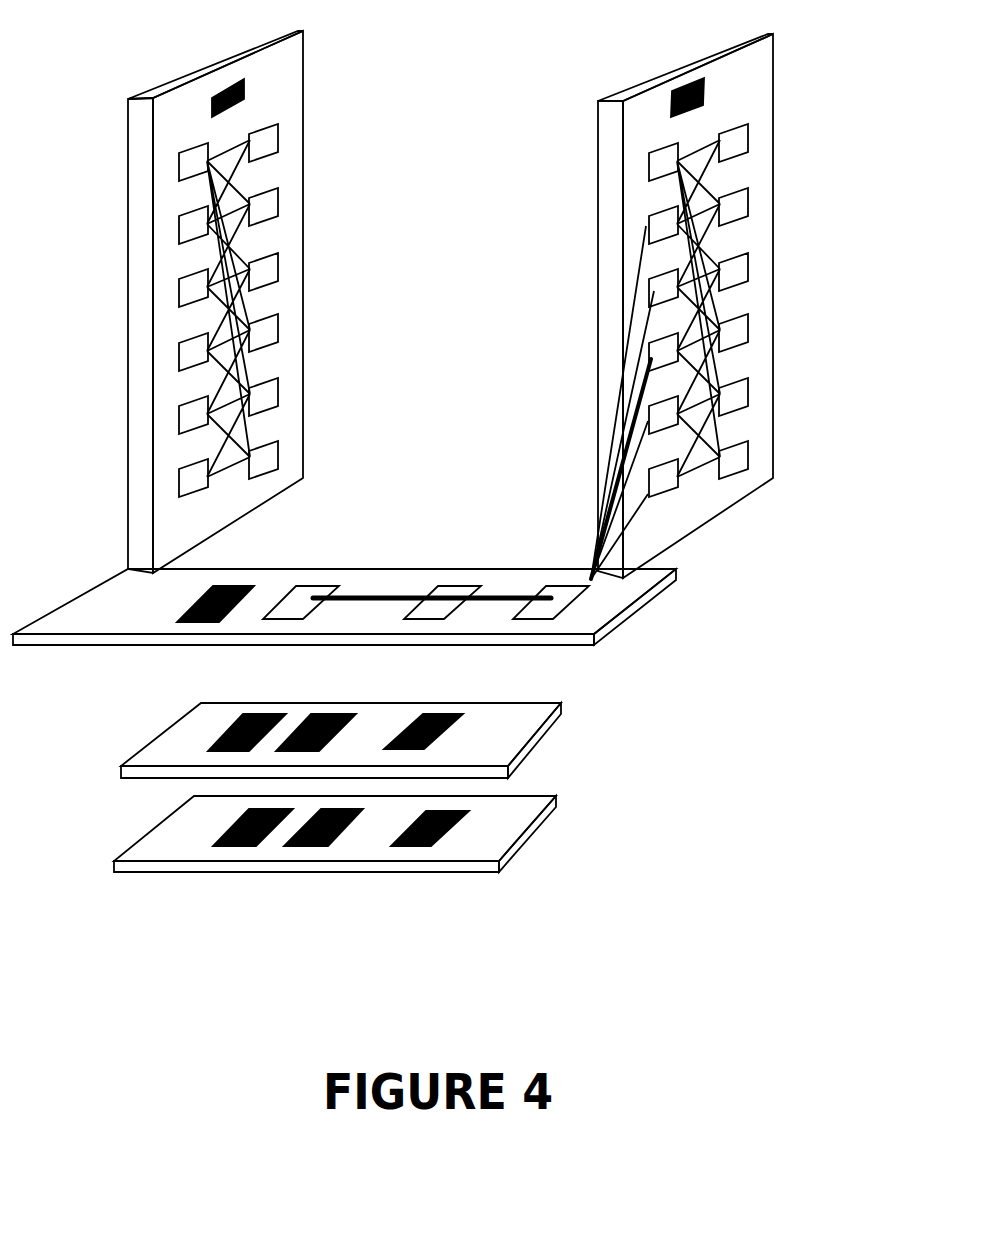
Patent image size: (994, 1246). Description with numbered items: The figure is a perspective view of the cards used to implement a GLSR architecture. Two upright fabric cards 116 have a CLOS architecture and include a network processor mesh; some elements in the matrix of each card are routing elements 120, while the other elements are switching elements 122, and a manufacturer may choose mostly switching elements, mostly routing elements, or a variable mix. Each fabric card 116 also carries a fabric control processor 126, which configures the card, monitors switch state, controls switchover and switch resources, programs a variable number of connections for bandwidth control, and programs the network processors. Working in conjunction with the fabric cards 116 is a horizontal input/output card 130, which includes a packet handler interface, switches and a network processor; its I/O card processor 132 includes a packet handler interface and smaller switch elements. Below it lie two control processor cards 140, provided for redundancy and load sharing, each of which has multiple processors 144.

The fabric card 116 is at (285, 73).
The routing element 120 is at (178, 292).
The switching element 122 is at (178, 220).
The fabric control processor 126 is at (243, 98).
The input/output (I/O) card 130 is at (600, 612).
The I/O card processor 132 is at (197, 622).
The control processor card 140 is at (515, 727).
The processor 144 is at (433, 713).